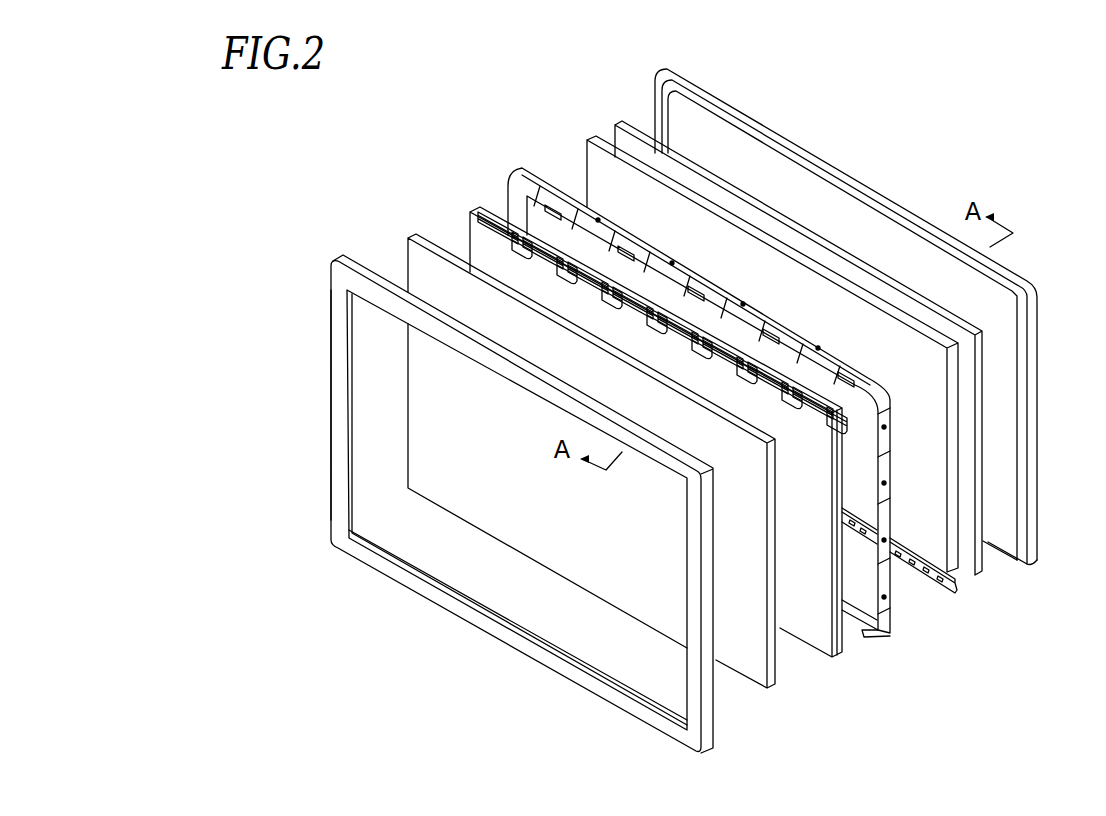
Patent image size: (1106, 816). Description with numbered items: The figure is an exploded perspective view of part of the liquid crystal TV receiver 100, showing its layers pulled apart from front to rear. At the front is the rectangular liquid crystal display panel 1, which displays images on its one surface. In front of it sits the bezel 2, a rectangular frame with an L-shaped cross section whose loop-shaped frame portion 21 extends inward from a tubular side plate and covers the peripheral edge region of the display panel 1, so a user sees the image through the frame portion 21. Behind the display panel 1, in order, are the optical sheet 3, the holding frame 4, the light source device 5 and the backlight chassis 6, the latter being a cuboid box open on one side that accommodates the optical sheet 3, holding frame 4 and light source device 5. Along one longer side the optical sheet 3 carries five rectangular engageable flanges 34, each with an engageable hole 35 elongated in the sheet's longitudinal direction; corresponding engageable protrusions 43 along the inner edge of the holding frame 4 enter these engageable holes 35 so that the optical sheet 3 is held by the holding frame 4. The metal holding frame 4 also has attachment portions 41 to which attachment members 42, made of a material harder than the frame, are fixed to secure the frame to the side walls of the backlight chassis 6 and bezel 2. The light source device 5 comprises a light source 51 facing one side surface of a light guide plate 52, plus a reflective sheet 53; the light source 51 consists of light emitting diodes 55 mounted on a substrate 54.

The liquid crystal TV receiver 100 is at (362, 168).
The liquid crystal display panel 1 is at (768, 690).
The bezel 2 is at (484, 504).
The frame portion 21 is at (332, 325).
The optical sheet 3 is at (813, 652).
The holding frame 4 is at (862, 637).
The attachment portions 41 is at (556, 206).
The attachment members 42 is at (584, 198).
The engageable protrusions 43 is at (510, 200).
The engageable flanges 34 is at (488, 224).
The engageable hole 35 is at (505, 234).
The light source device 5 is at (824, 425).
The light source 51 is at (912, 600).
The light guide plate 52 is at (958, 573).
The reflective sheet 53 is at (981, 578).
The substrate 54 is at (957, 592).
The light emitting diodes 55 is at (929, 574).
The backlight chassis 6 is at (1036, 528).